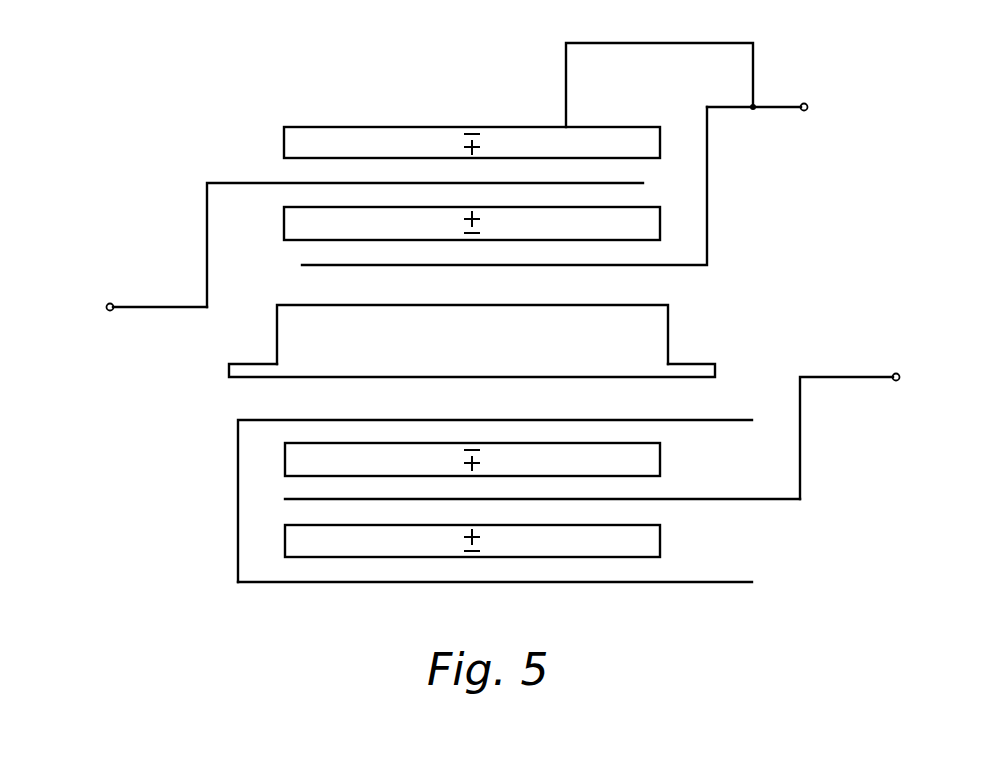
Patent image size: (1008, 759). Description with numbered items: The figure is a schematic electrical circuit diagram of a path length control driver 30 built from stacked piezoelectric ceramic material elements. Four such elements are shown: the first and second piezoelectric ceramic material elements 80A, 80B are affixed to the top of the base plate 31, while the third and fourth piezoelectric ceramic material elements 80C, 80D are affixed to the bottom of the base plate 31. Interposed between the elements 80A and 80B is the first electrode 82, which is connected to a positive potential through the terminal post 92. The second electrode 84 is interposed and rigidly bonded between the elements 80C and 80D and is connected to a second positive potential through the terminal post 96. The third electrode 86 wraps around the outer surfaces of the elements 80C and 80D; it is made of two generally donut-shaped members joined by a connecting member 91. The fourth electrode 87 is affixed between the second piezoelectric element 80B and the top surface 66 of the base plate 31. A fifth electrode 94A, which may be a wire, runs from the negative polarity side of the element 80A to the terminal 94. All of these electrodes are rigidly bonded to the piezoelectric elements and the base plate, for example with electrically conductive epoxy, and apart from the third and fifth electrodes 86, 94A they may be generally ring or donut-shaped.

The path length control driver 30 is at (485, 80).
The base plate 31 is at (645, 340).
The top surface of the base plate 66 is at (298, 305).
The first piezoelectric ceramic material element 80A is at (583, 147).
The second piezoelectric ceramic material element 80B is at (643, 225).
The third piezoelectric ceramic material element 80C is at (650, 460).
The fourth piezoelectric ceramic material element 80D is at (648, 543).
The first electrode 82 is at (207, 240).
The second electrode 84 is at (800, 472).
The third electrode 86 is at (320, 583).
The fourth electrode 87 is at (707, 250).
The connecting member 91 is at (238, 496).
The terminal post 92 is at (109, 304).
The terminal 94 is at (806, 104).
The fifth electrode 94A is at (652, 43).
The terminal post 96 is at (895, 374).